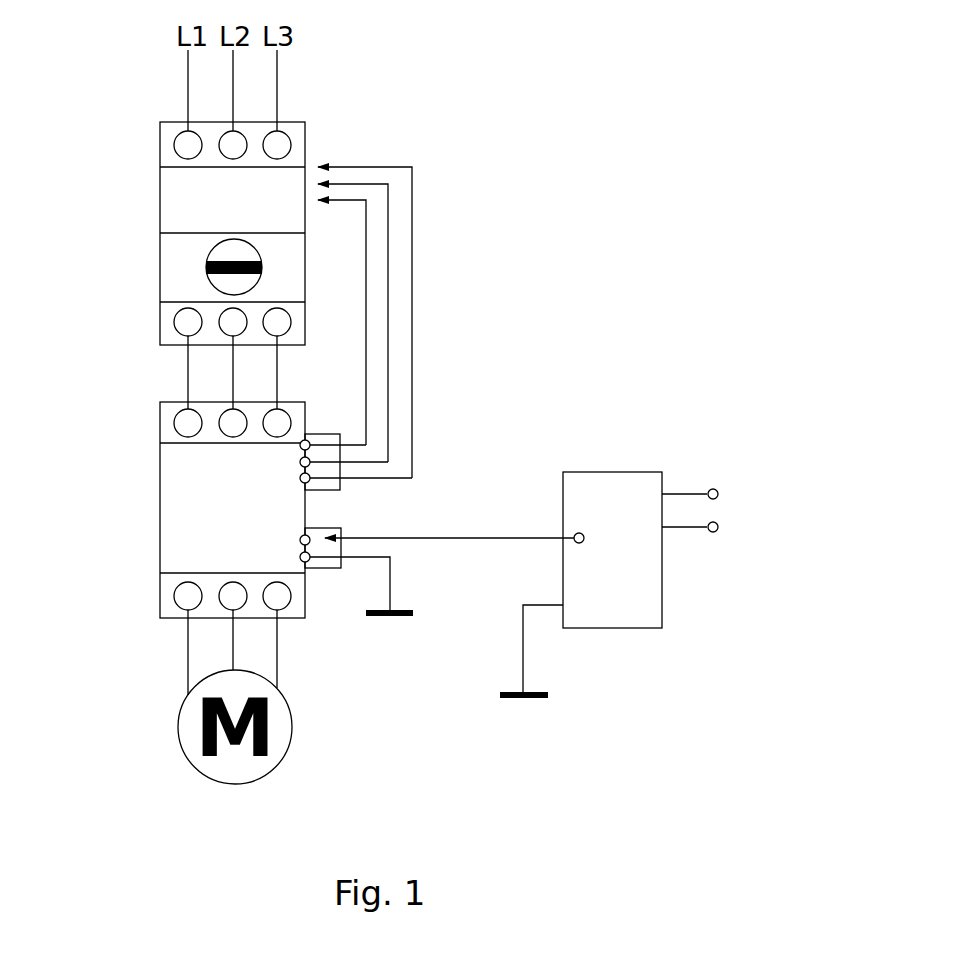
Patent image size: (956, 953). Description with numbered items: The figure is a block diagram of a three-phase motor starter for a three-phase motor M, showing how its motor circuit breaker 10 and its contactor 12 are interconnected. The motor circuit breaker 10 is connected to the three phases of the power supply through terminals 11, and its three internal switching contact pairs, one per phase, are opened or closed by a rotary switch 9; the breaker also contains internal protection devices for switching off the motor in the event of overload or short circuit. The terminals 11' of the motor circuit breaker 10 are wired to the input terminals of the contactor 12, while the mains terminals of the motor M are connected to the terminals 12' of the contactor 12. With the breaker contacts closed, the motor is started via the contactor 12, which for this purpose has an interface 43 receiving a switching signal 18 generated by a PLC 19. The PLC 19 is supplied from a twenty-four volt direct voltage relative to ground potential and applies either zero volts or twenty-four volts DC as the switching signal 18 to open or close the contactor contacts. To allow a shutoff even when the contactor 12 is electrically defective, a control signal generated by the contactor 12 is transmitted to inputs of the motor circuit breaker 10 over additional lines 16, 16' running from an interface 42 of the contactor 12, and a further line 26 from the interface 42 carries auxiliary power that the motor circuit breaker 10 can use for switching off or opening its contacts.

The rotary switch 9 is at (247, 252).
The motor circuit breaker 10 is at (191, 237).
The terminals 11 is at (196, 154).
The terminals 11' is at (194, 327).
The contactor 12 is at (174, 514).
The terminals 12' is at (193, 599).
The line 16 is at (402, 322).
The line 16' is at (406, 323).
The switching signal 18 is at (458, 536).
The PLC 19 is at (608, 485).
The further line 26 is at (366, 345).
The interface 42 is at (322, 436).
The interface 43 is at (322, 570).